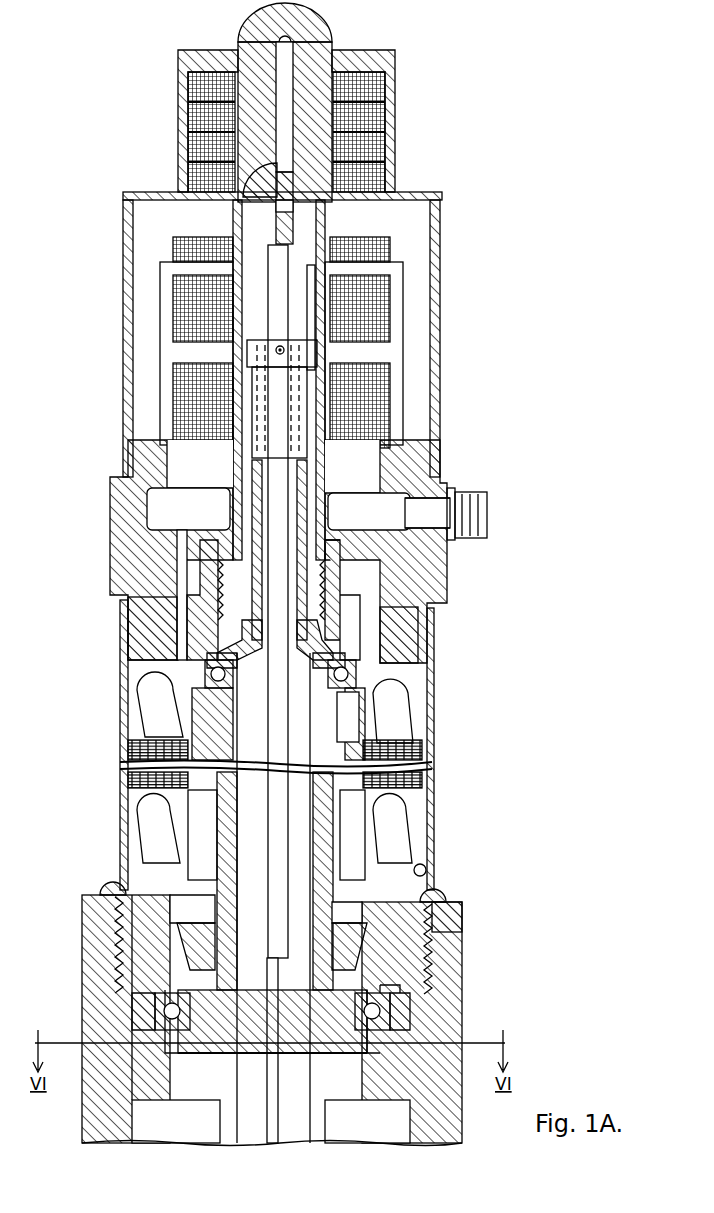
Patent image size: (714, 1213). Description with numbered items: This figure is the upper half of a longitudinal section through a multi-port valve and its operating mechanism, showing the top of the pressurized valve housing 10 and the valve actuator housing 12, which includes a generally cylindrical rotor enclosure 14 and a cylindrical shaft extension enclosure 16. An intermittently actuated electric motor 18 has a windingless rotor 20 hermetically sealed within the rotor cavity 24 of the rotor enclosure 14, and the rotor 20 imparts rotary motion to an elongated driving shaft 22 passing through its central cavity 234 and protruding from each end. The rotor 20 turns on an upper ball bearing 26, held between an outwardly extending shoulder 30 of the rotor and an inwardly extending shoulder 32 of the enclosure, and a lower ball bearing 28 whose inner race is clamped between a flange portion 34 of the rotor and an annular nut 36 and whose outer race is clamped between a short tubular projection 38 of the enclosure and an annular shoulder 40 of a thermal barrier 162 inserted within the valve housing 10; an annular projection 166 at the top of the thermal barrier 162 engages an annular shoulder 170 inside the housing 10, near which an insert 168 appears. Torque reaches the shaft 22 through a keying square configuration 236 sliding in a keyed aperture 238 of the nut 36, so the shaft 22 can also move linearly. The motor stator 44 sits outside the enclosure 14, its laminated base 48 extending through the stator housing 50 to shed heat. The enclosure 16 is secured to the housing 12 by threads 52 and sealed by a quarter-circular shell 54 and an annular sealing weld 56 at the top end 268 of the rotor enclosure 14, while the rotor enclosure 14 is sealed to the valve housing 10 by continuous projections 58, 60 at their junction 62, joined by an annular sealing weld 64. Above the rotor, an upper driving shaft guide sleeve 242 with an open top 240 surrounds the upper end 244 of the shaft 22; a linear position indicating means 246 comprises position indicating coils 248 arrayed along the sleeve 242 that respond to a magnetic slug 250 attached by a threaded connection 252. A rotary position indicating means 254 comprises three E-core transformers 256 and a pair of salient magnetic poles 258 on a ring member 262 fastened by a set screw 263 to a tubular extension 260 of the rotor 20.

The pressurized valve housing 10 is at (285, 1019).
The valve actuator housing 12 is at (400, 628).
The rotor enclosure 14 is at (372, 862).
The shaft extension enclosure 16 is at (328, 230).
The electric motor 18 is at (298, 763).
The rotor 20 is at (232, 735).
The driving shaft 22 is at (278, 270).
The rotor cavity 24 is at (352, 730).
The upper ball bearing 26 is at (357, 670).
The lower ball bearing 28 is at (398, 1012).
The outwardly extending shoulder 30 is at (349, 717).
The inwardly extending shoulder 32 is at (350, 645).
The flange portion 34 is at (362, 956).
The annular nut 36 is at (312, 1005).
The short tubular projection 38 is at (395, 985).
The annular shoulder 40 is at (395, 1035).
The motor stator 44 is at (410, 738).
The laminated base 48 is at (425, 768).
The stator housing 50 is at (435, 806).
The threads 52 is at (228, 560).
The quarter-circular shell 54 is at (360, 537).
The annular sealing weld 56 is at (362, 548).
The continuous projection 58 is at (426, 868).
The continuous projection 60 is at (450, 892).
The junction 62 is at (432, 925).
The annular sealing weld 64 is at (115, 882).
The thermal barrier 162 is at (225, 1120).
The annular projection 166 is at (150, 1012).
The insert 168 is at (135, 995).
The annular shoulder 170 is at (150, 1035).
The central cavity 234 is at (250, 706).
The keying square configuration 236 is at (300, 1118).
The keyed aperture 238 is at (270, 1023).
The top of guide sleeve 240 is at (328, 23).
The upper driving shaft guide sleeve 242 is at (318, 62).
The upper end of driving shaft 244 is at (240, 200).
The linear position indicating means 246 is at (396, 62).
The position indicating coils 248 is at (188, 100).
The magnetic slug 250 is at (322, 206).
The threaded connection 252 is at (275, 210).
The rotary position indicating means 254 is at (405, 355).
The E-core transformers 256 is at (160, 300).
The salient magnetic poles 258 is at (307, 290).
The tubular extension 260 is at (306, 482).
The ring member 262 is at (313, 355).
The set screw 263 is at (280, 346).
The top end of rotor enclosure 268 is at (240, 640).